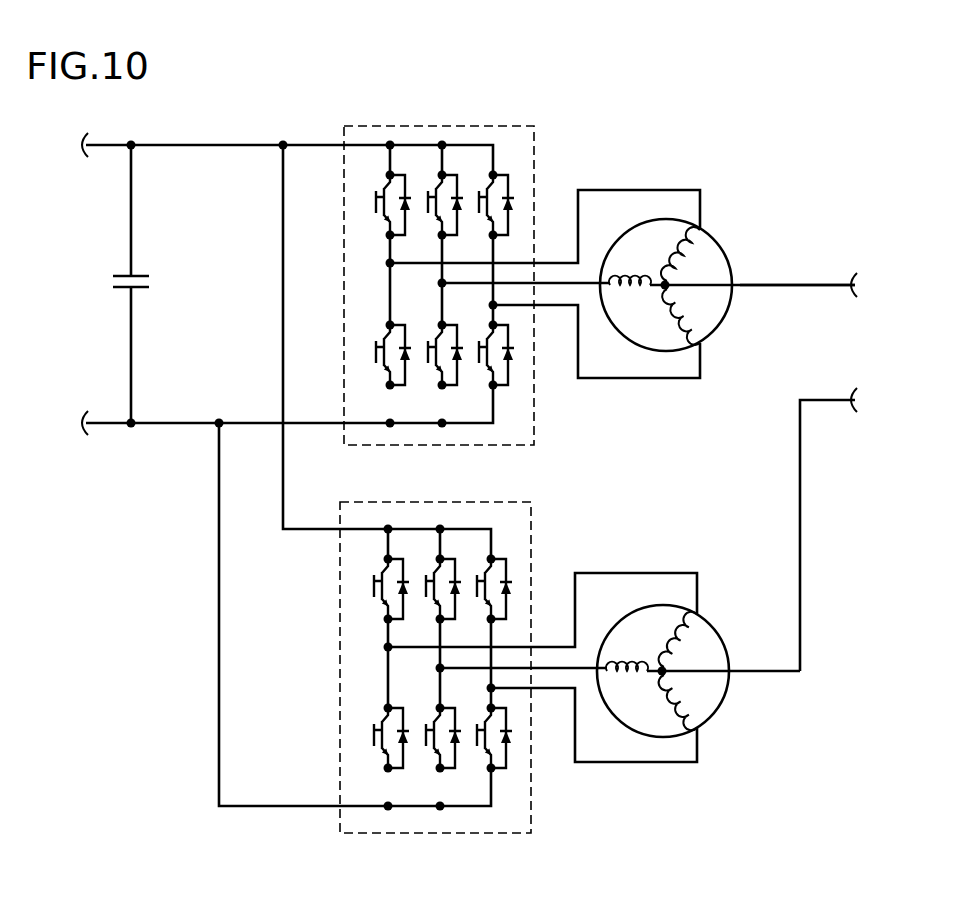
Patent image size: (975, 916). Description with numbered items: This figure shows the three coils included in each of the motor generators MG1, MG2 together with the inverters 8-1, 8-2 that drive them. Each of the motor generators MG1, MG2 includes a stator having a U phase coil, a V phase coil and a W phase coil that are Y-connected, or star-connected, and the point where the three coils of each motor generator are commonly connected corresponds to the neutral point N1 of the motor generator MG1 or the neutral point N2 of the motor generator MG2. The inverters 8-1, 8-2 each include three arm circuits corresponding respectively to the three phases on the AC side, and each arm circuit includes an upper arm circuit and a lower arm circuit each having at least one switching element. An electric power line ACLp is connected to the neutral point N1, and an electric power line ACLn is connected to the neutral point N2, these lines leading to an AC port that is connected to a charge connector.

The inverter 8-1 is at (534, 424).
The inverter 8-2 is at (531, 808).
The motor generator MG1 is at (722, 327).
The motor generator MG2 is at (718, 713).
The neutral point N1 is at (664, 284).
The neutral point N2 is at (661, 670).
The electric power line ACLp is at (805, 283).
The electric power line ACLn is at (801, 497).